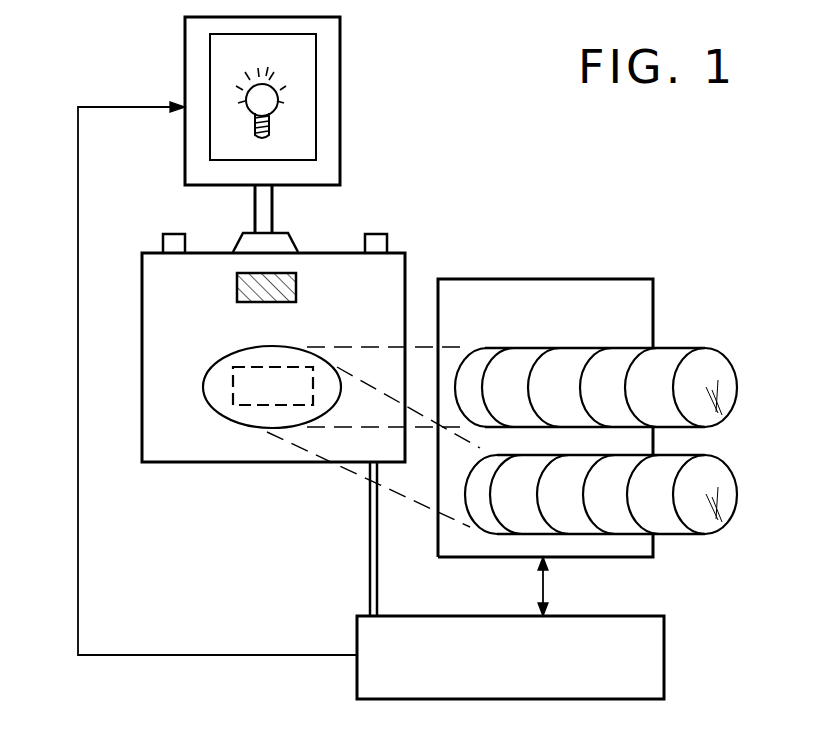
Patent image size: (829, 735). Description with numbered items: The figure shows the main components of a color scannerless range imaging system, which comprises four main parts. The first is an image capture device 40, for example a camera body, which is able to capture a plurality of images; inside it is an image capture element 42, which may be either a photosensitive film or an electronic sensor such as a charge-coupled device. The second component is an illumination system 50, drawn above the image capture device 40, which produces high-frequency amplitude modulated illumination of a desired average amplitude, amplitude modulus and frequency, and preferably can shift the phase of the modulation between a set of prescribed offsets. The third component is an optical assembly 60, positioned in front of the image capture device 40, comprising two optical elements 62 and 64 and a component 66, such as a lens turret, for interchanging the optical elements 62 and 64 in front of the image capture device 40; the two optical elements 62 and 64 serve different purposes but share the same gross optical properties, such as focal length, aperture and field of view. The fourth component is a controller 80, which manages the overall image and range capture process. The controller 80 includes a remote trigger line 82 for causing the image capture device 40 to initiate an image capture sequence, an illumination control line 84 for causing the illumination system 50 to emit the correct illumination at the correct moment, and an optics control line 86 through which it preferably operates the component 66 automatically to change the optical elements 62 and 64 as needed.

The image capture device 40 is at (178, 462).
The image capture element 42 is at (233, 387).
The illumination system 50 is at (340, 92).
The optical assembly 60 is at (615, 399).
The optical element 62 is at (717, 362).
The optical element 64 is at (716, 538).
The component for interchanging the optical elements 66 is at (507, 293).
The controller 80 is at (664, 660).
The remote trigger line 82 is at (368, 513).
The illumination control line 84 is at (78, 603).
The optics control line 86 is at (548, 582).